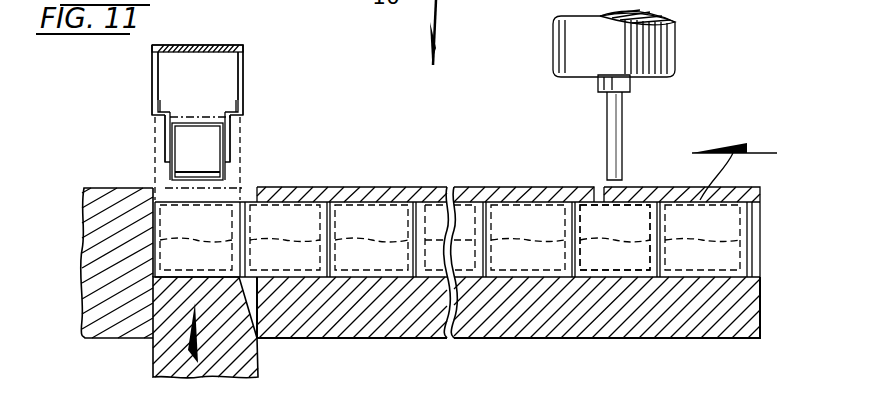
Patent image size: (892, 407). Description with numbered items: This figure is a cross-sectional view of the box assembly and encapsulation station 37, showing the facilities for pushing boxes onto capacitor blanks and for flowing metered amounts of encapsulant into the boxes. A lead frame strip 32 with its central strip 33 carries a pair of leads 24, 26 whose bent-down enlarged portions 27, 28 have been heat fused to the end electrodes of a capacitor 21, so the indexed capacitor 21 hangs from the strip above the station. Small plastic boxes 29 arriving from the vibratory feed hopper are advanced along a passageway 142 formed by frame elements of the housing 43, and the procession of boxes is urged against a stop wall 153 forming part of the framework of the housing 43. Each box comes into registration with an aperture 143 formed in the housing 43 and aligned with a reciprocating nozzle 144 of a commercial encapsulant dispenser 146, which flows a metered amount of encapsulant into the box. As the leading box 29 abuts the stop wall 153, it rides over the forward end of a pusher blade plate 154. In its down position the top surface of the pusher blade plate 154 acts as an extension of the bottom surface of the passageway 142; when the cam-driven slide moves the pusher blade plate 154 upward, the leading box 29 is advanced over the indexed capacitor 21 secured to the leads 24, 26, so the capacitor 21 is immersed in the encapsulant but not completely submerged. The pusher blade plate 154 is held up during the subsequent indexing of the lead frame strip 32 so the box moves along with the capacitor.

The capacitor 21 is at (208, 155).
The lead 24 is at (152, 77).
The lead 26 is at (243, 77).
The enlarged portion 27 is at (165, 132).
The enlarged portion 28 is at (230, 132).
The plastic box 29 is at (247, 172).
The lead frame strip 32 is at (243, 54).
The central strip 33 is at (217, 45).
The box assembly and encapsulation station 37 is at (299, 118).
The housing 43 is at (708, 338).
The passageway 142 is at (622, 263).
The aperture 143 is at (627, 197).
The reciprocating nozzle 144 is at (609, 128).
The encapsulant dispenser 146 is at (665, 52).
The stop wall 153 is at (155, 202).
The pusher blade plate 154 is at (245, 355).